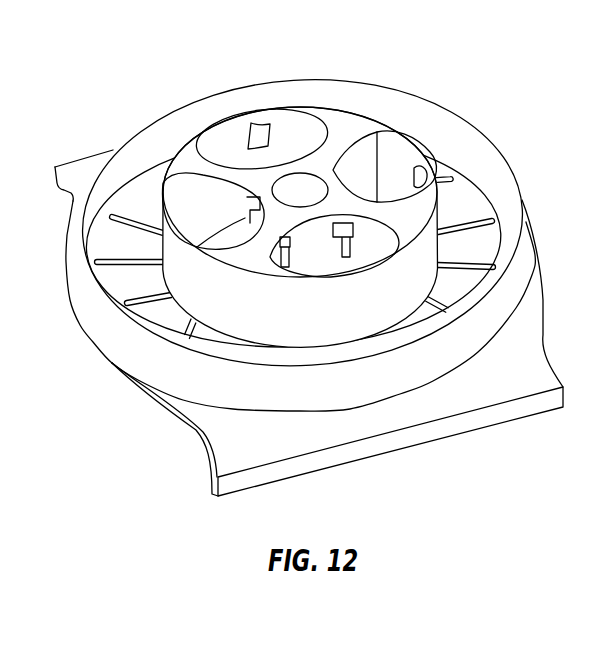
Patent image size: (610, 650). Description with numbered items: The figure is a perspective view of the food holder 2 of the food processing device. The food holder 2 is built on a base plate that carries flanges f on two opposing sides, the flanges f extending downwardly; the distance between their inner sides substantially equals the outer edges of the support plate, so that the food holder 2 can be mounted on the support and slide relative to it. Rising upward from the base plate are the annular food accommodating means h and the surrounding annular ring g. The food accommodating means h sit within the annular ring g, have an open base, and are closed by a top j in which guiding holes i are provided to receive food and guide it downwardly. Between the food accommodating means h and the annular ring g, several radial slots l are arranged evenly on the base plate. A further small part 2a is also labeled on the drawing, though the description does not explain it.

The food holder 2 is at (444, 438).
The pin 2a is at (345, 213).
The flanges f is at (55, 167).
The annular ring g is at (513, 300).
The annular food accommodating means h is at (327, 330).
The guiding holes i is at (290, 127).
The top j is at (347, 123).
The radial slots l is at (137, 222).